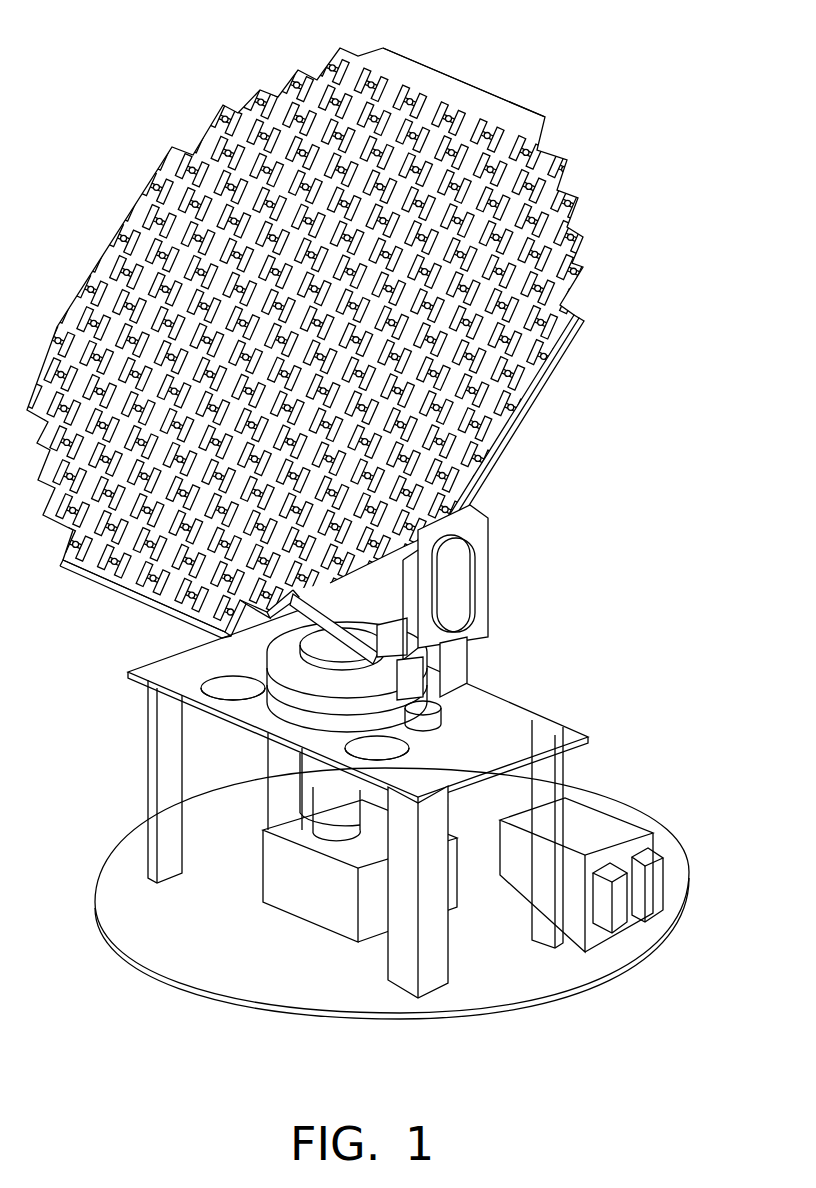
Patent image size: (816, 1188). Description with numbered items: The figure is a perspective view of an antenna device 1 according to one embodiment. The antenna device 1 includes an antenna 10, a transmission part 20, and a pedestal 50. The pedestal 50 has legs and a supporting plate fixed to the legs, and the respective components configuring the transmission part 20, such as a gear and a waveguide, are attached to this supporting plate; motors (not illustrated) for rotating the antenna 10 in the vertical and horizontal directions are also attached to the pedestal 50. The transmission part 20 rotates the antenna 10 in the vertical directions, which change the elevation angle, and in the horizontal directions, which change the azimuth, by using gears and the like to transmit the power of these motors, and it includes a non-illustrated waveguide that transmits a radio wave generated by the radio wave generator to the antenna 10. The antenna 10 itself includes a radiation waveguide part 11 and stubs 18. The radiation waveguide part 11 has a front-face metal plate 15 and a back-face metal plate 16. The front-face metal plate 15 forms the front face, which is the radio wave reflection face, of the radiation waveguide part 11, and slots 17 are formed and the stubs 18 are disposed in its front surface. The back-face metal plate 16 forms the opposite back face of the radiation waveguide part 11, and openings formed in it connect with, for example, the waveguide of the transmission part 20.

The antenna device 1 is at (693, 86).
The antenna 10 is at (574, 91).
The radiation waveguide part 11 is at (632, 90).
The front-face metal plate 15 is at (523, 97).
The back-face metal plate 16 is at (547, 135).
The slots 17 is at (408, 62).
The stubs 18 is at (452, 107).
The transmission part 20 is at (514, 652).
The pedestal 50 is at (595, 734).